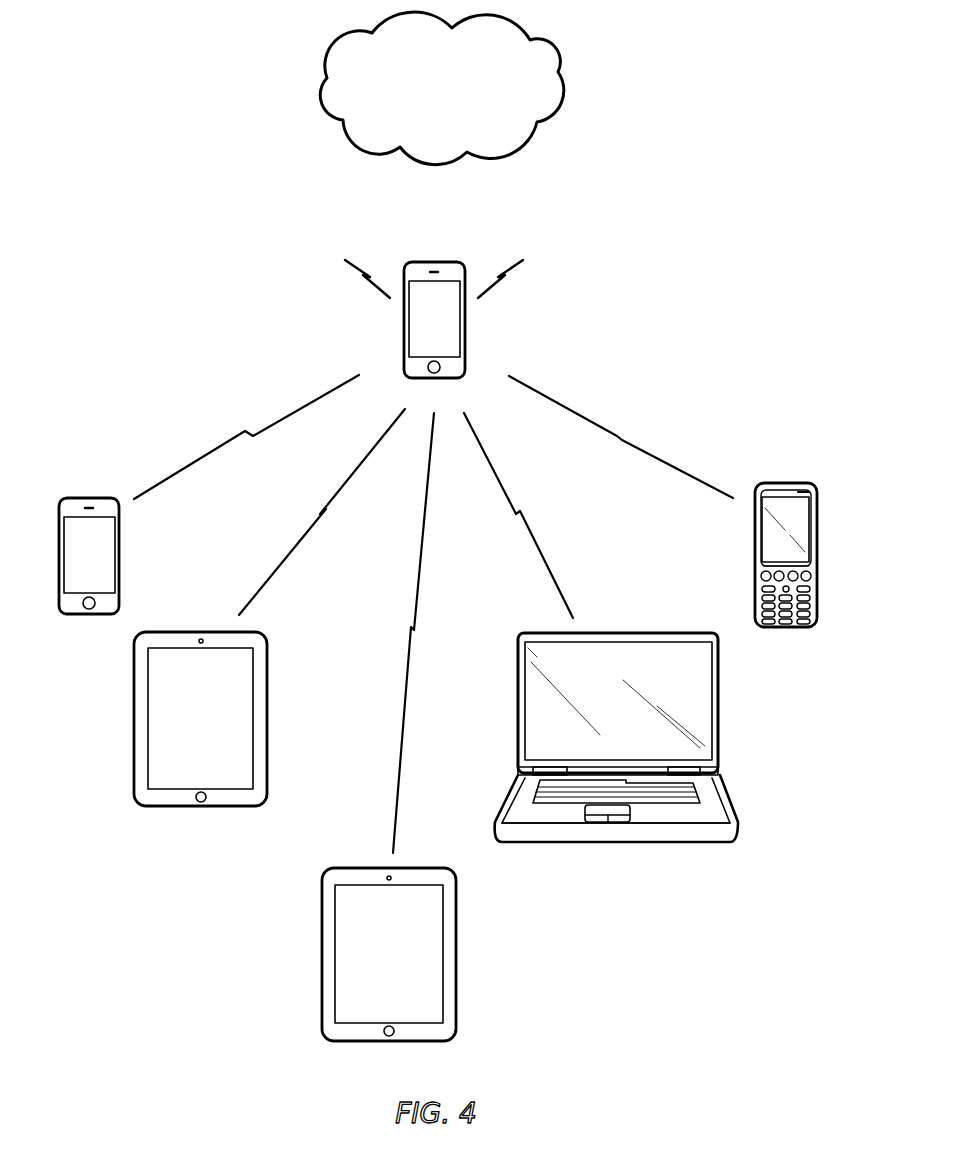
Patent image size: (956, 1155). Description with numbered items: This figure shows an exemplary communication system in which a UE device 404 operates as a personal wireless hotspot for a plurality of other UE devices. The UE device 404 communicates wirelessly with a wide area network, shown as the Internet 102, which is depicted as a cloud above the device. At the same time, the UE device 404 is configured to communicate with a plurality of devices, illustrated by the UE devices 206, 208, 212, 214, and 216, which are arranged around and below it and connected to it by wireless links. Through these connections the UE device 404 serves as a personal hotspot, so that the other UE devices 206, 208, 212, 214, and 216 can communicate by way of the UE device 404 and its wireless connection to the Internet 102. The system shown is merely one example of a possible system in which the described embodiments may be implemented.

The Internet 102 is at (427, 108).
The UE device 404 is at (443, 262).
The UE device 206 is at (85, 498).
The UE device 208 is at (190, 632).
The UE device 212 is at (646, 633).
The UE device 214 is at (785, 483).
The UE device 216 is at (378, 868).